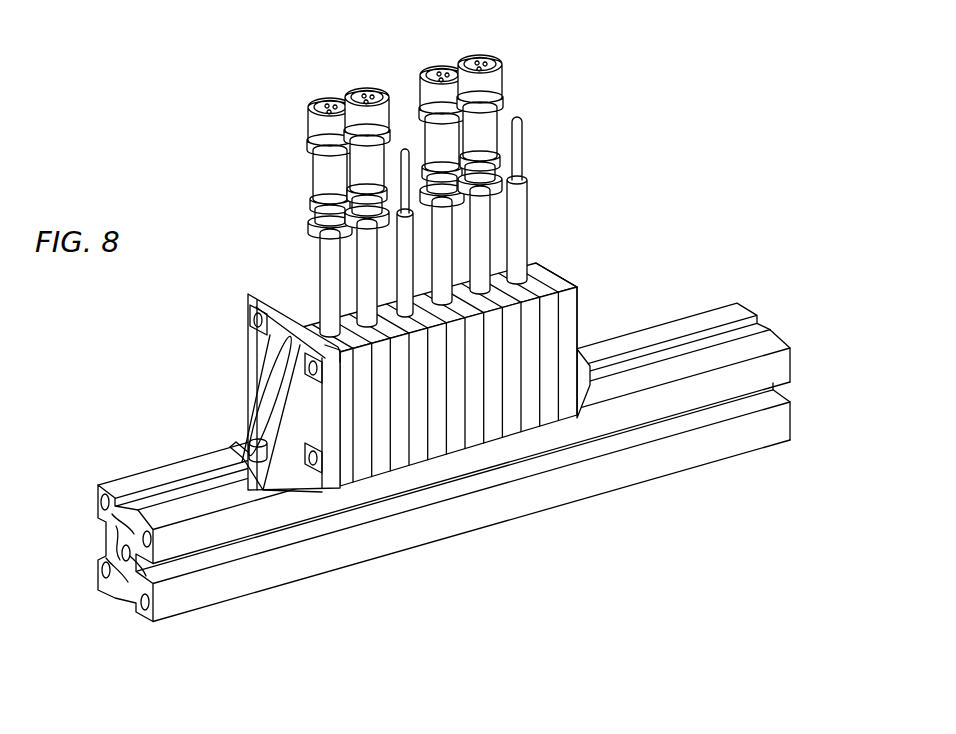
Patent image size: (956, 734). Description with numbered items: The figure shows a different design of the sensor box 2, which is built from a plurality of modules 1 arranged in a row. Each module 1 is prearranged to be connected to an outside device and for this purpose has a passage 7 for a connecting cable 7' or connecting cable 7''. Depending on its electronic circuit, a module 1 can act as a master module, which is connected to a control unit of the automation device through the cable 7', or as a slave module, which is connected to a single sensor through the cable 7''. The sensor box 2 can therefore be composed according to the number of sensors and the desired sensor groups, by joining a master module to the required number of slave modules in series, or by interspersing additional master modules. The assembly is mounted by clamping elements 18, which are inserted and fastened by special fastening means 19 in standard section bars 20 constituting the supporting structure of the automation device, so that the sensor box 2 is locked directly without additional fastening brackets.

The module 1 is at (270, 281).
The sensor box 2 is at (580, 127).
The passage 7 is at (557, 200).
The connecting cable 7' is at (412, 171).
The connecting cable 7'' is at (291, 217).
The clamping elements 18 is at (260, 456).
The fastening means 19 is at (260, 440).
The standard section bars 20 is at (709, 320).